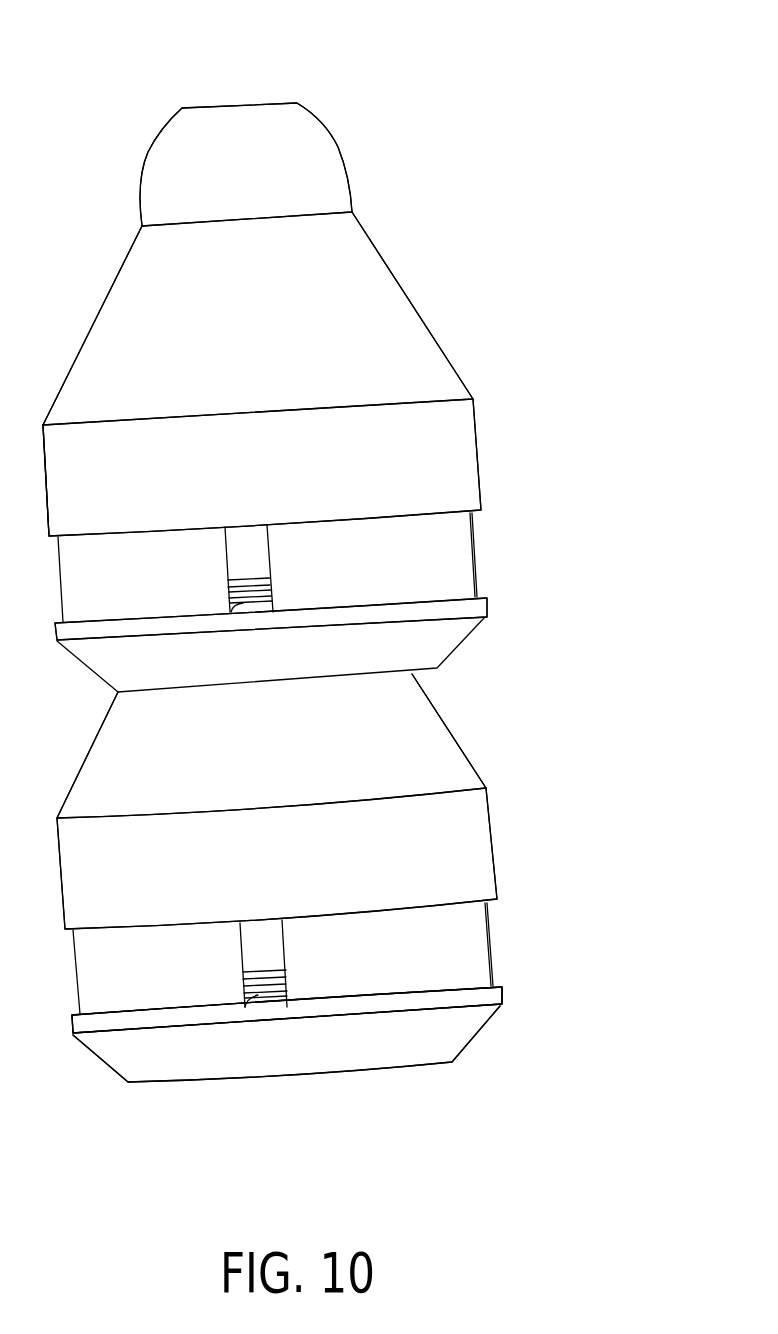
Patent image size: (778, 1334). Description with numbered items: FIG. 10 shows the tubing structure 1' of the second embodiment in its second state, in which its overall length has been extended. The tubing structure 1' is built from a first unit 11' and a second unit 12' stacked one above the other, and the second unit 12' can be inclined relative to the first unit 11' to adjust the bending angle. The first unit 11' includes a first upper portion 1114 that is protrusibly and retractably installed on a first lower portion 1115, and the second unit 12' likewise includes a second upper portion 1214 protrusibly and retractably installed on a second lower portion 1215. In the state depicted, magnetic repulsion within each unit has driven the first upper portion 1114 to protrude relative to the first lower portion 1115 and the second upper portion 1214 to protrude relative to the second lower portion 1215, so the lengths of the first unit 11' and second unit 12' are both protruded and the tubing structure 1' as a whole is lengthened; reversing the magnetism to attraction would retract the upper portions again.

The tubing structure 1' is at (338, 542).
The second unit 12' is at (367, 426).
The first unit 11' is at (374, 853).
The second upper portion 1214 is at (407, 343).
The second lower portion 1215 is at (417, 550).
The first upper portion 1114 is at (428, 758).
The first lower portion 1115 is at (455, 956).